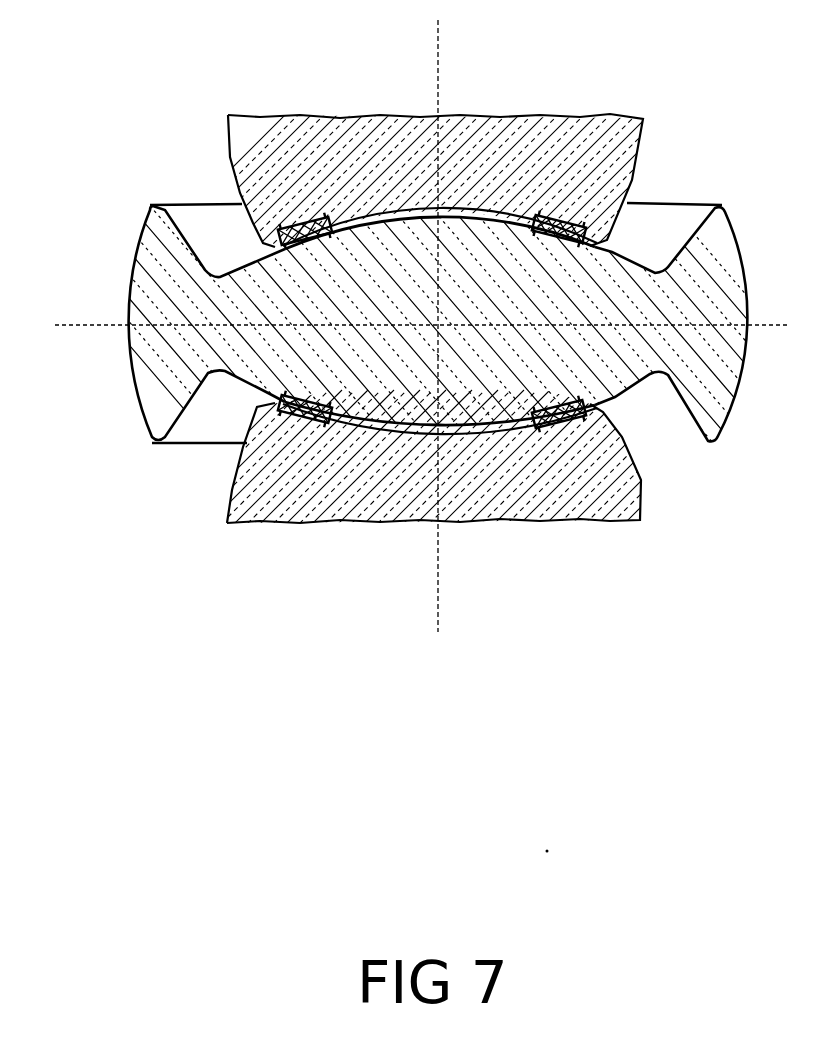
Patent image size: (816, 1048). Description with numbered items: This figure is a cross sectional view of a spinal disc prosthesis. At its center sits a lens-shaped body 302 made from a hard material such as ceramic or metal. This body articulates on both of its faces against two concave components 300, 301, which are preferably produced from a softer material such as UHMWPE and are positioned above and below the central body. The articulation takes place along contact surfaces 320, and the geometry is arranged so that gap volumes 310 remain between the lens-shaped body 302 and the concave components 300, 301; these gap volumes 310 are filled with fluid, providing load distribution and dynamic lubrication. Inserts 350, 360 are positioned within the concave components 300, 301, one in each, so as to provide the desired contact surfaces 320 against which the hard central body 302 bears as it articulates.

The concave component 300 is at (287, 150).
The concave component 301 is at (310, 480).
The central lens-shaped body 302 is at (173, 380).
The gap volume 310 is at (485, 203).
The contact surface 320 is at (562, 222).
The insert 350 is at (287, 253).
The insert 360 is at (230, 495).